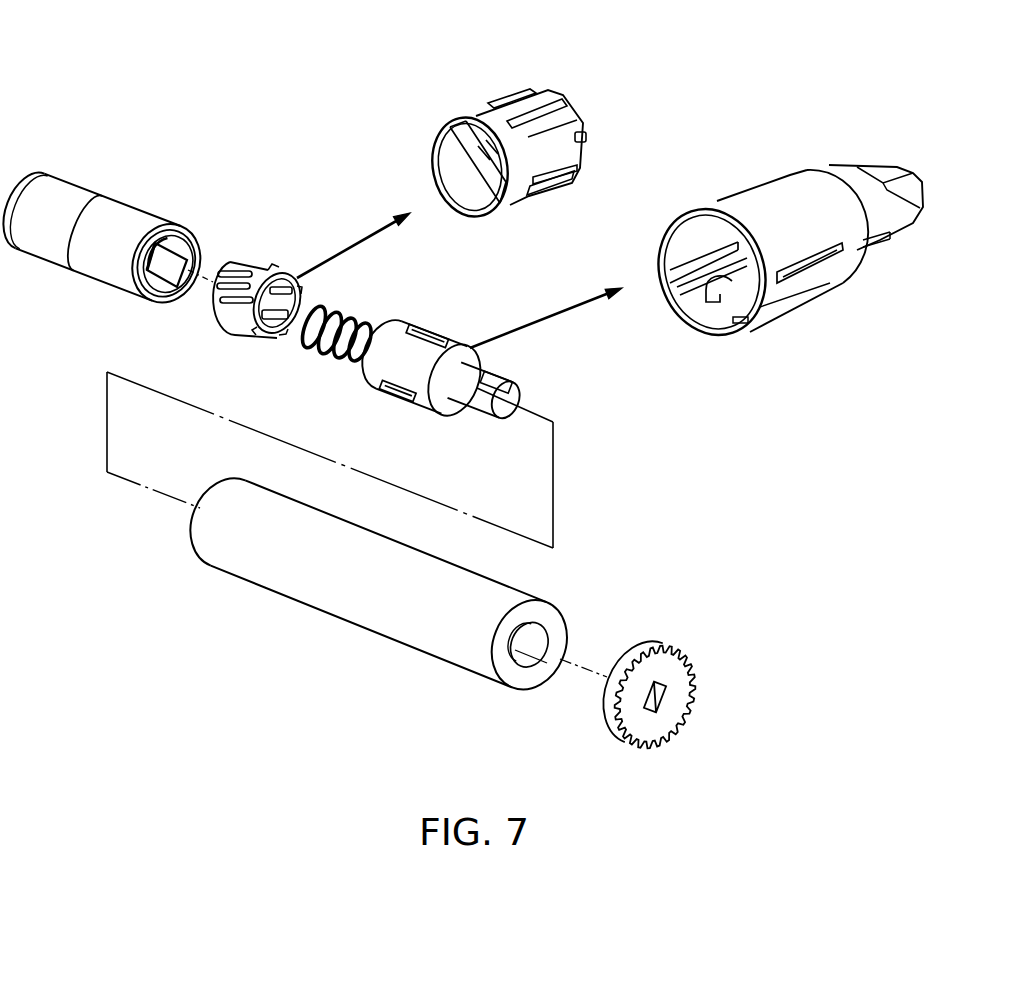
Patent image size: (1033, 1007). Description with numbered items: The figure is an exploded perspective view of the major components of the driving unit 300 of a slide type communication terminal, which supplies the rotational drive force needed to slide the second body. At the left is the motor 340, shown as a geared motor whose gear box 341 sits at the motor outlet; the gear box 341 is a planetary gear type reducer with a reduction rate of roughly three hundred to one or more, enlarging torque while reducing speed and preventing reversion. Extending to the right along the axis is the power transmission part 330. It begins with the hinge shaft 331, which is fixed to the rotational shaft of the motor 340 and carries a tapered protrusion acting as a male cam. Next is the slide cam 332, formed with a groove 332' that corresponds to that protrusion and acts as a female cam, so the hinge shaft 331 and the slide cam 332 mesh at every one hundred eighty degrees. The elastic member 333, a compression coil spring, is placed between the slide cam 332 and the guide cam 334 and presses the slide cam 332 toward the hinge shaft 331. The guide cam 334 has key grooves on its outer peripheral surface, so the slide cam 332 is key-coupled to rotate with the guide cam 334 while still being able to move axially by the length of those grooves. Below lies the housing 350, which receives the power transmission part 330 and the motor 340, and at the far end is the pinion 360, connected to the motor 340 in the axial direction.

The driving unit 300 is at (142, 22).
The power transmission part 330 is at (718, 103).
The hinge shaft 331 is at (182, 232).
The slide cam 332 is at (450, 214).
The groove 332' is at (441, 131).
The elastic member 333 is at (343, 310).
The guide cam 334 is at (450, 340).
The motor 340 is at (47, 187).
The gear box 341 is at (127, 217).
The housing 350 is at (280, 578).
The pinion 360 is at (670, 660).